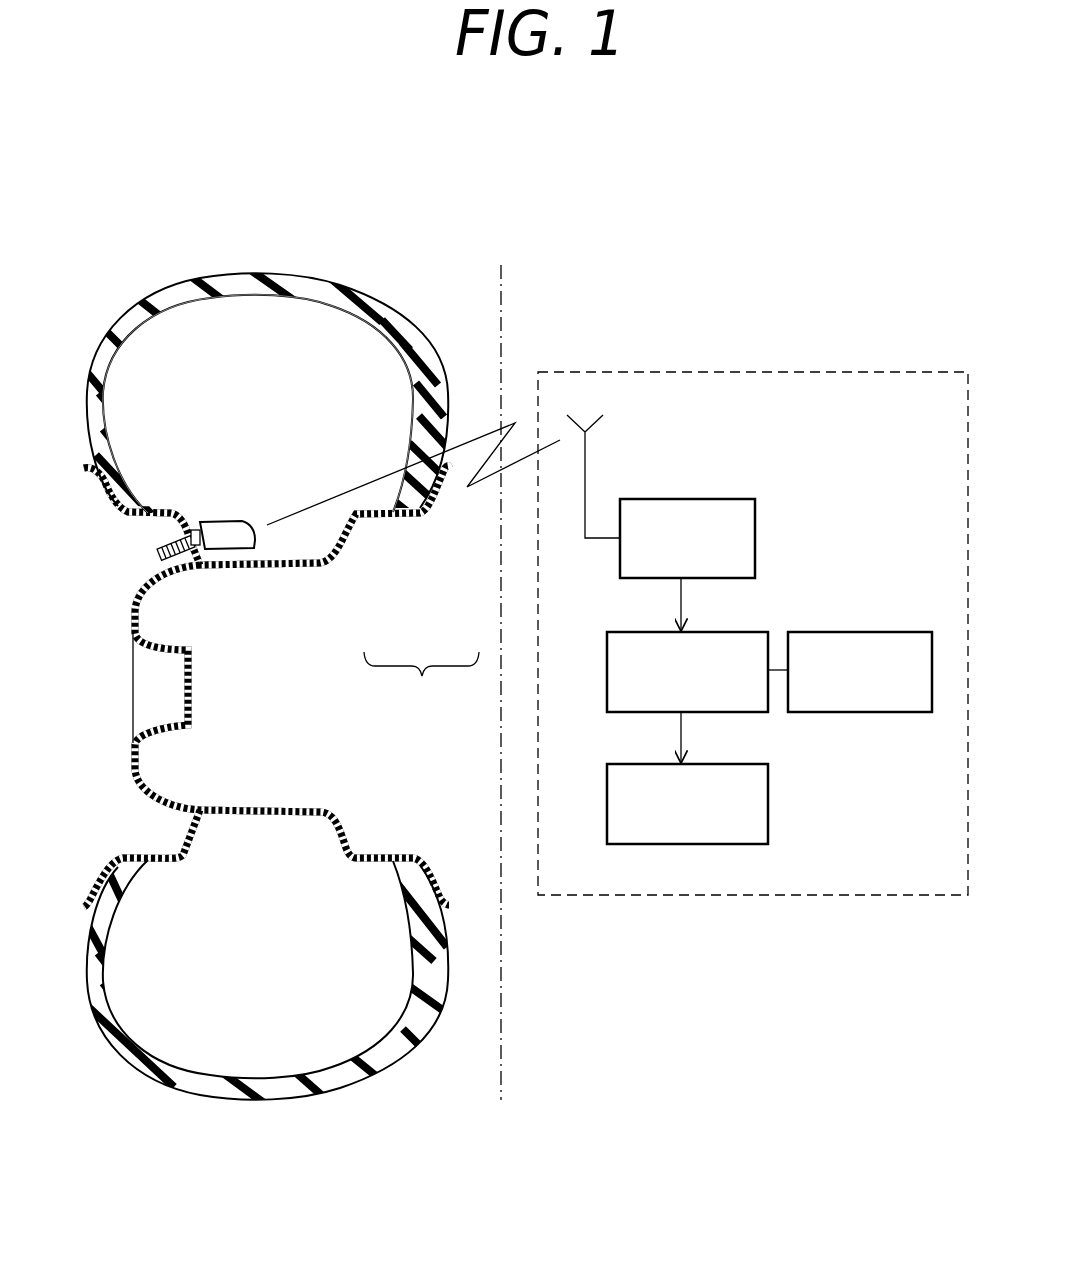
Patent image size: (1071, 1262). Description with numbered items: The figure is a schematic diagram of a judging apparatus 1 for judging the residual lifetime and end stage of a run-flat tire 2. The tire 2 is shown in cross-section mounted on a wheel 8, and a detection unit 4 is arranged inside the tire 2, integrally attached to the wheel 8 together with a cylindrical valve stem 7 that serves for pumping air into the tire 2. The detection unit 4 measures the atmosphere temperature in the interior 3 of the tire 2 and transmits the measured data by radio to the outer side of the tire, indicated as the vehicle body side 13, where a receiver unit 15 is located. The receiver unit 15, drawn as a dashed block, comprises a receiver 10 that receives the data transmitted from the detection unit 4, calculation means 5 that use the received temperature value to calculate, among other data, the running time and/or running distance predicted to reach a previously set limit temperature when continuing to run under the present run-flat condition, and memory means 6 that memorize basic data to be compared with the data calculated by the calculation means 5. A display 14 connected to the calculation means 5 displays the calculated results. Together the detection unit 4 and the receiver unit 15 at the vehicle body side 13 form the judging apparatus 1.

The judging apparatus 1 is at (421, 684).
The run-flat tire 2 is at (372, 295).
The interior of the tire 3 is at (258, 397).
The detection unit 4 is at (255, 542).
The calculation means 5 is at (607, 658).
The memory means 6 is at (859, 632).
The cylindrical valve stem 7 is at (160, 553).
The wheel 8 is at (237, 565).
The receiver 10 is at (755, 527).
The vehicle body side 13 is at (501, 300).
The display 14 is at (607, 790).
The receiver unit 15 is at (538, 532).